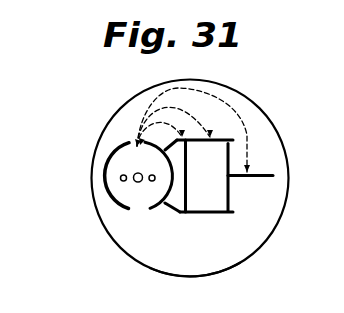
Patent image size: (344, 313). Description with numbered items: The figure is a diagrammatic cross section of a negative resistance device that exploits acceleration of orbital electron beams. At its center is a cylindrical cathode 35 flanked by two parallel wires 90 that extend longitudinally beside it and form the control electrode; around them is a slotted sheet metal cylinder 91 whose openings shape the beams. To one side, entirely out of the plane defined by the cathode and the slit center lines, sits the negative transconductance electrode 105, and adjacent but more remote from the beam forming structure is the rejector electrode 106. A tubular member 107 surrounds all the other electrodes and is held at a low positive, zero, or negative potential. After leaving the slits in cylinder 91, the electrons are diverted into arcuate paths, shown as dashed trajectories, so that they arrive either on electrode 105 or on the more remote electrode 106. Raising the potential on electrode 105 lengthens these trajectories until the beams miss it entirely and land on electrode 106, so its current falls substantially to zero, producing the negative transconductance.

The cylindrical cathode 35 is at (110, 156).
The parallel wires 90 is at (120, 177).
The cylinder 91 is at (121, 182).
The negative transconductance electrode 105 is at (186, 215).
The rejector electrode 106 is at (261, 171).
The tubular member 107 is at (248, 261).